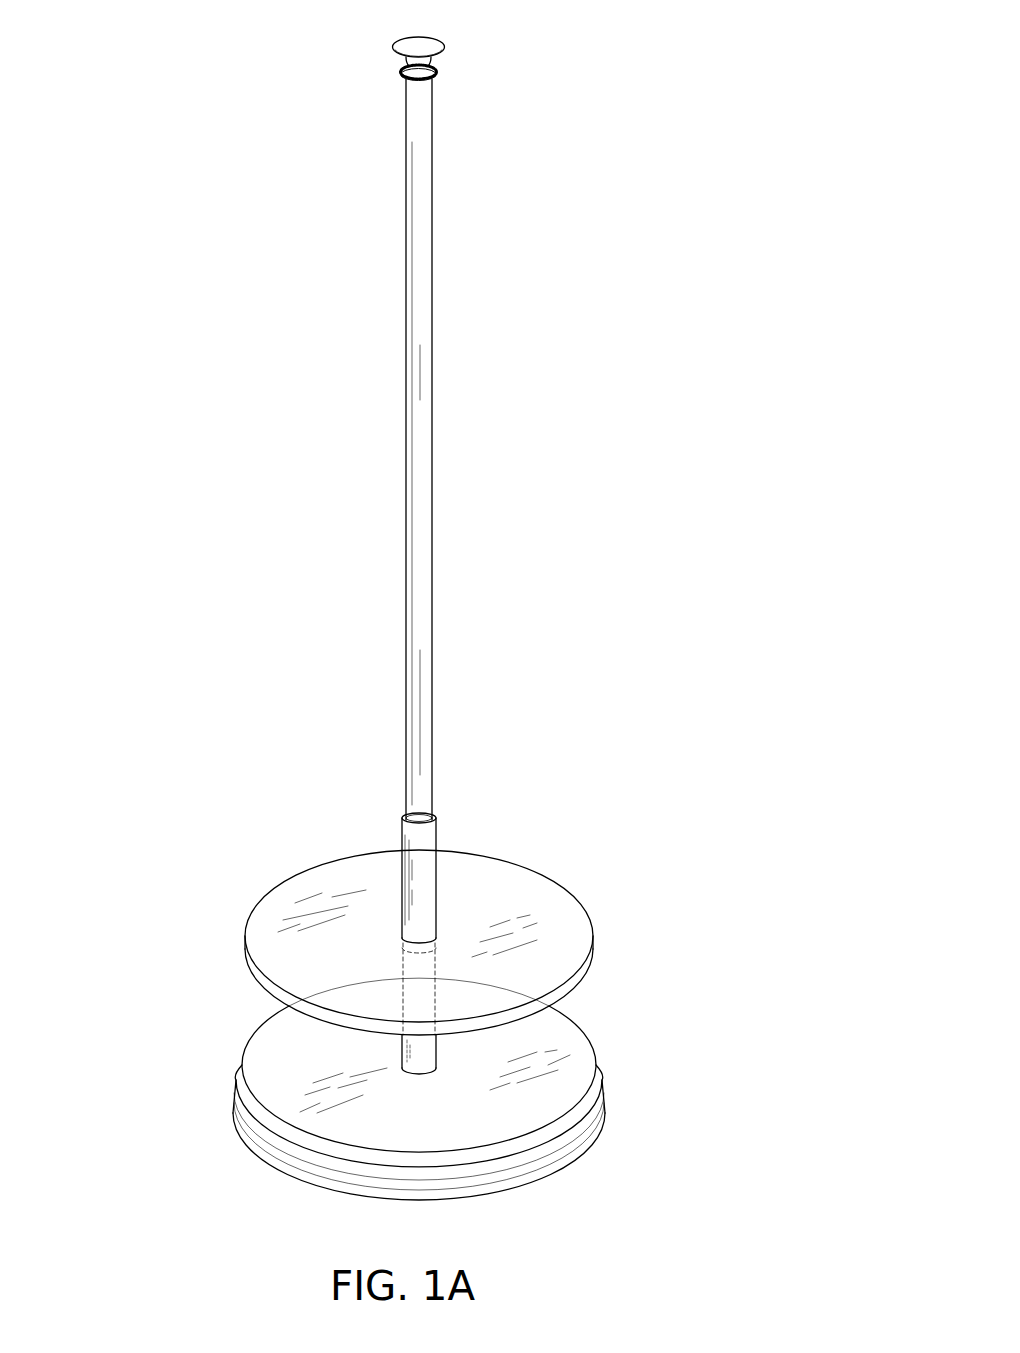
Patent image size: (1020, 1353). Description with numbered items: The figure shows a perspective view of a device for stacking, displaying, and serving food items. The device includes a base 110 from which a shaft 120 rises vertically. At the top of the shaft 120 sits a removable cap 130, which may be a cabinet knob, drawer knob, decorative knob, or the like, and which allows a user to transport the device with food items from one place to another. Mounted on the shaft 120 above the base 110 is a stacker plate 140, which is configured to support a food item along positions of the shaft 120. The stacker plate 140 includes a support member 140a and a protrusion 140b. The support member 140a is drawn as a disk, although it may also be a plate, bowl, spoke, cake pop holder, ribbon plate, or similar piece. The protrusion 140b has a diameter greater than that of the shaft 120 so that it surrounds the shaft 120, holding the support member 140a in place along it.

The base 110 is at (555, 1095).
The shaft 120 is at (421, 343).
The removable cap 130 is at (427, 45).
The stacker plate 140 is at (550, 807).
The support member 140a is at (277, 948).
The protrusion 140b is at (425, 860).